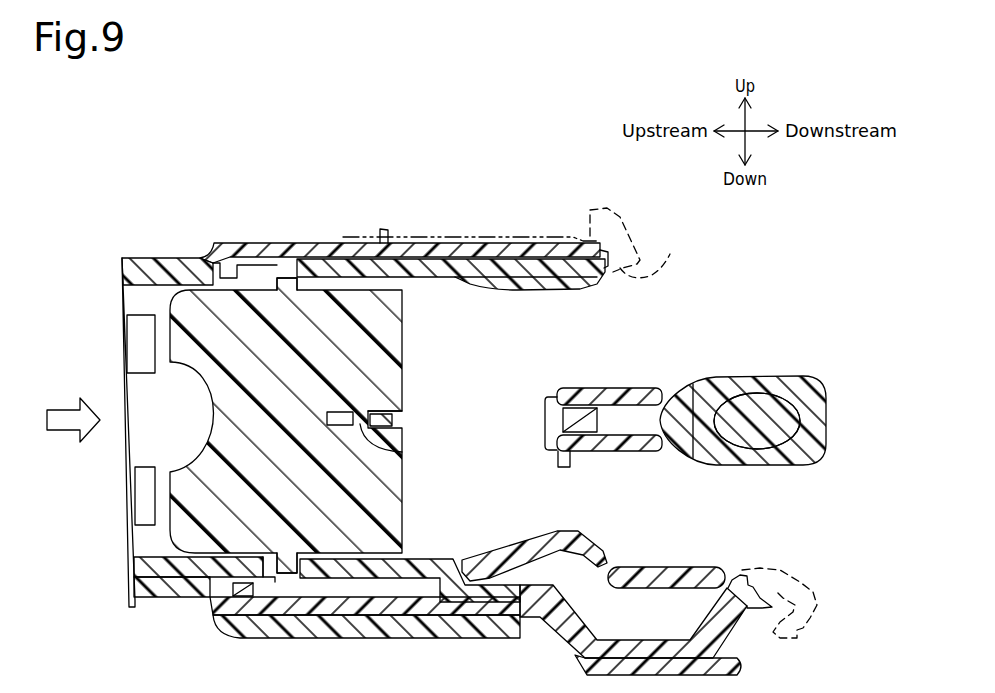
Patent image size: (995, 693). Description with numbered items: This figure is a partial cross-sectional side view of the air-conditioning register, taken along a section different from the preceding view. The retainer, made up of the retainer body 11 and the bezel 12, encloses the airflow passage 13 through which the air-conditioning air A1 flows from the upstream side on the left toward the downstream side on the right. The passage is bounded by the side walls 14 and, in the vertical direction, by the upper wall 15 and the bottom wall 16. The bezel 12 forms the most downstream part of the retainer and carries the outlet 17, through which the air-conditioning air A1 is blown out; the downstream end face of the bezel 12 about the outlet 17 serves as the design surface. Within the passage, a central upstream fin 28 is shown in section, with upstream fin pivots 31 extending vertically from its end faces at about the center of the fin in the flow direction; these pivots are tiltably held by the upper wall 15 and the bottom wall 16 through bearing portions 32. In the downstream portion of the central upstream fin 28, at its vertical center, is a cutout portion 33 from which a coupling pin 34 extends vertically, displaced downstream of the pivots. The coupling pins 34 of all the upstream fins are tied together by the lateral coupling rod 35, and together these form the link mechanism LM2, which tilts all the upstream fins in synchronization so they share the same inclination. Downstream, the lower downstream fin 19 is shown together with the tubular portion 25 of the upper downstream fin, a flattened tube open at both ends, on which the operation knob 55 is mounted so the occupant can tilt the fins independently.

The retainer body 11 is at (224, 254).
The airflow passage 13 is at (126, 284).
The side wall 14 is at (163, 290).
The upper wall 15 is at (422, 252).
The bezel 12 is at (620, 217).
The outlet 17 is at (668, 255).
The bottom wall 16 is at (460, 608).
The downstream fin 19 is at (618, 566).
The central upstream fin 28 is at (404, 328).
The upstream fin pivot 31 is at (292, 262).
The bearing portion 32 is at (268, 264).
The cutout portion 33 is at (394, 406).
The coupling pin 34 is at (392, 450).
The lateral coupling rod 35 is at (392, 420).
The tubular portion 25 is at (540, 400).
The operation knob 55 is at (745, 475).
The air-conditioning air A1 is at (62, 432).
The link mechanism LM2 is at (466, 410).